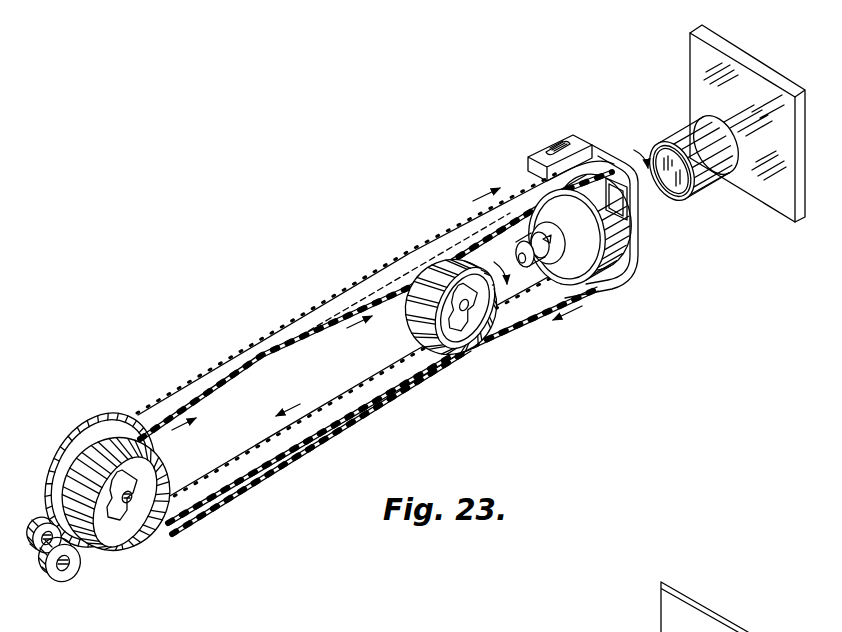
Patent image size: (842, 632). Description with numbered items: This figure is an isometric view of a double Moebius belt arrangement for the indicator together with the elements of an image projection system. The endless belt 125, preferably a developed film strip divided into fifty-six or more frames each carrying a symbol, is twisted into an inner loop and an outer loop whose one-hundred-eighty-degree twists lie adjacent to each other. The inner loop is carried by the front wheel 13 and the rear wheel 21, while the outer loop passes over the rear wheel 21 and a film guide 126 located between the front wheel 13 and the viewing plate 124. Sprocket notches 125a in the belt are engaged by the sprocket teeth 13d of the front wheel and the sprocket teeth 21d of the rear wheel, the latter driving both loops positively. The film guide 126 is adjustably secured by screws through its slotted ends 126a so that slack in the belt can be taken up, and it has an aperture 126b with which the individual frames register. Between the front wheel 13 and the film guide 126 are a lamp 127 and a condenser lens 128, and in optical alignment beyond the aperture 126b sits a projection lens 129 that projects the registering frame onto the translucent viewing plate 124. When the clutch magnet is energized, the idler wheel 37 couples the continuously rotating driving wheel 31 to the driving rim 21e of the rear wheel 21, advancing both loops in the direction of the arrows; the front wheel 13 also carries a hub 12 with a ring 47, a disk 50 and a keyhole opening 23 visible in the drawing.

The viewing plate 124 is at (757, 78).
The projection lens 129 is at (719, 187).
The film guide 126 is at (638, 248).
The slotted ends 126a is at (553, 141).
The aperture 126b is at (628, 206).
The condenser lens 128 is at (622, 276).
The lamp 127 is at (560, 264).
The endless belt 125 is at (532, 316).
The sprocket notches 125a is at (182, 390).
The front wheel 13 is at (424, 360).
The sprocket teeth 13d is at (417, 340).
The sprocket ring 47 is at (481, 336).
The sprocket hub 12 is at (468, 340).
The rear wheel 21 is at (158, 524).
The sprocket teeth 21d is at (166, 474).
The driving rim 21e is at (92, 434).
The sprocket disk 50 is at (138, 530).
The keyhole opening 23 is at (117, 527).
The idler wheel 37 is at (34, 556).
The driving wheel 31 is at (64, 582).